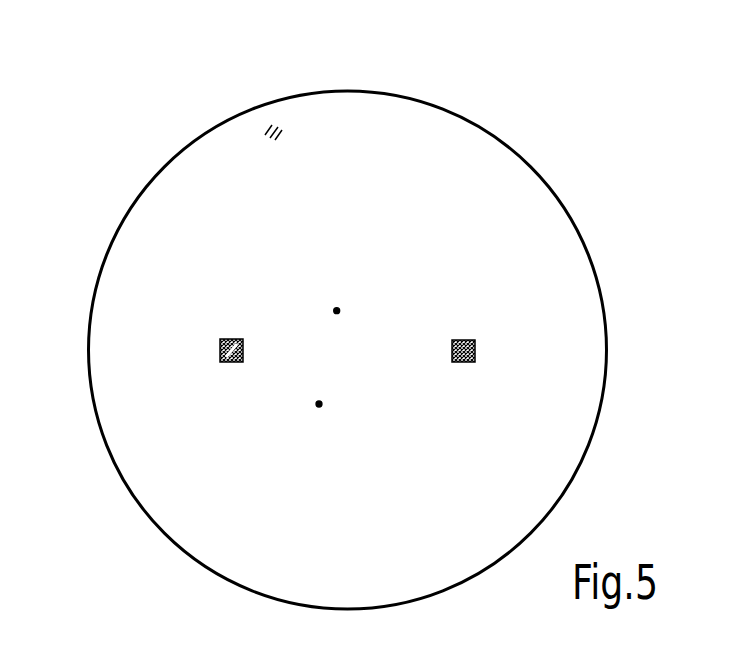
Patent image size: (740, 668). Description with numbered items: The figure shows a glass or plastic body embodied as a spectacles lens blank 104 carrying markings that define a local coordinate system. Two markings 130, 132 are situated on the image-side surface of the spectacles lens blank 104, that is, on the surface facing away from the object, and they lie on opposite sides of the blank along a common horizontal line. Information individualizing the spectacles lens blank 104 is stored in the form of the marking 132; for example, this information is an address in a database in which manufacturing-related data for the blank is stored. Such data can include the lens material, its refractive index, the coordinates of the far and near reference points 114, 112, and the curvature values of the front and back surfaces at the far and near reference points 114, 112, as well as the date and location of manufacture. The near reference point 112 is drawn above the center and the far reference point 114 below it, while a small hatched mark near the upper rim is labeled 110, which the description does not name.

The spectacles lens blank 104 is at (576, 223).
The edge region / marking 110 is at (273, 127).
The near reference point 112 is at (336, 308).
The far reference point 114 is at (317, 405).
The marking 130 is at (220, 350).
The marking 132 is at (475, 351).